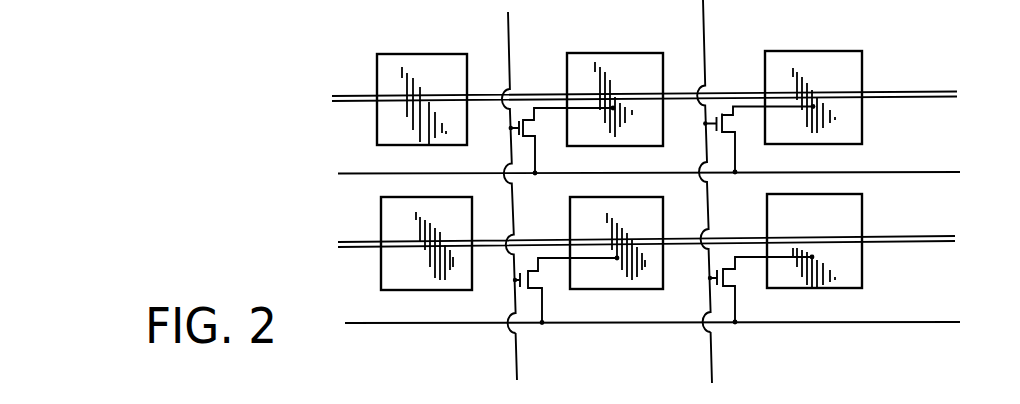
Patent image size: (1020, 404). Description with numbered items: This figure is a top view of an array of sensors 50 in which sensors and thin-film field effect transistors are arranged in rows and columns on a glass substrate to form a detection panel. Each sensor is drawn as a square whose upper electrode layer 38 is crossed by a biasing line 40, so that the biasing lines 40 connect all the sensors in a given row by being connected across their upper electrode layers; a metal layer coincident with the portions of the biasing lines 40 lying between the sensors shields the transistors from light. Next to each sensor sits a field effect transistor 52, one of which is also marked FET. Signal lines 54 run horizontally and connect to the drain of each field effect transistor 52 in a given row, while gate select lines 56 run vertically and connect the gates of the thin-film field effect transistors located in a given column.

The upper electrode layer 38 is at (870, 60).
The biasing lines 40 is at (932, 106).
The array of sensors 50 is at (268, 154).
The field effect transistor 52 is at (725, 99).
The signal lines 54 is at (343, 177).
The gate select lines 56 is at (530, 350).
The field effect transistor FET is at (745, 289).